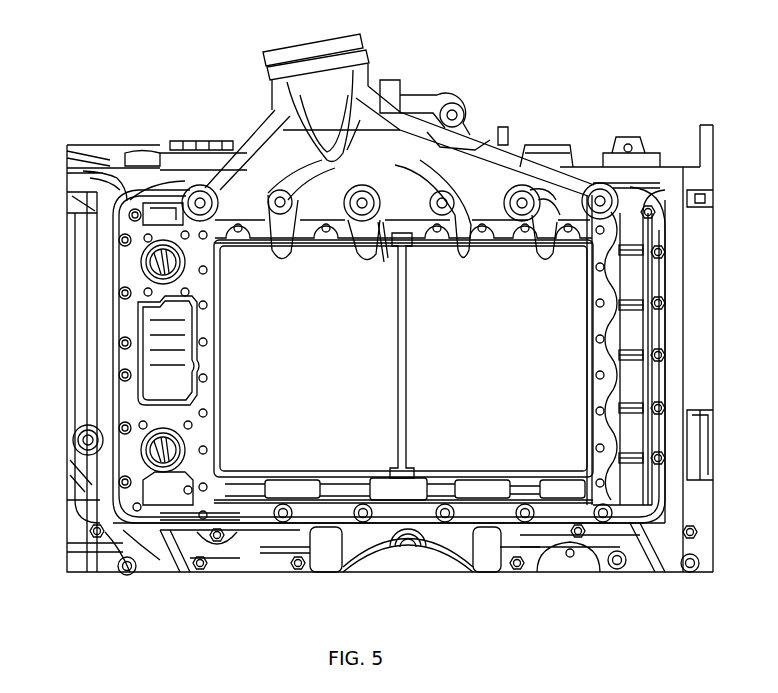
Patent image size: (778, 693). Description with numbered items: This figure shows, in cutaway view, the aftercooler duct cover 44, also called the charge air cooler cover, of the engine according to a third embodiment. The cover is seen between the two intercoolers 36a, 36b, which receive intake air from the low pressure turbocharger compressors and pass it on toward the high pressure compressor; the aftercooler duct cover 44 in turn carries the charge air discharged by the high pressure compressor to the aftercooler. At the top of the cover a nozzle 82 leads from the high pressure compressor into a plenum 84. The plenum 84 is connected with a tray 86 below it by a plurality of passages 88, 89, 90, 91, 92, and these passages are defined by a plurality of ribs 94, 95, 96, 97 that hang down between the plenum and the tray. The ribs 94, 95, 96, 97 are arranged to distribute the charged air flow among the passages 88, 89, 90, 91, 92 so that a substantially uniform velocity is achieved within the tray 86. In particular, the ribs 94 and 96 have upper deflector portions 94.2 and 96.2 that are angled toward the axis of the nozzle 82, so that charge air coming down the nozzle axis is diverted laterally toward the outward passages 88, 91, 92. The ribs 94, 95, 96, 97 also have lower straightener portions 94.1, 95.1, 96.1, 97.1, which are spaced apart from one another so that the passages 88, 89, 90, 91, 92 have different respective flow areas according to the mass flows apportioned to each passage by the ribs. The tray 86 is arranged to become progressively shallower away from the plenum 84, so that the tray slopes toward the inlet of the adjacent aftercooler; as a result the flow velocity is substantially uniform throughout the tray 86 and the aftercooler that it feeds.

The nozzle 82 is at (378, 72).
The plenum 84 is at (387, 163).
The tray 86 is at (320, 374).
The passage 88 is at (258, 217).
The passage 89 is at (338, 217).
The passage 90 is at (405, 240).
The passage 91 is at (503, 217).
The passage 92 is at (578, 217).
The rib 94 is at (280, 258).
The lower straightener portion 94.1 is at (262, 190).
The upper deflector portion 94.2 is at (298, 167).
The rib 95 is at (357, 245).
The lower straightener portion 95.1 is at (383, 262).
The rib 96 is at (462, 258).
The lower straightener portion 96.1 is at (457, 220).
The upper deflector portion 96.2 is at (454, 104).
The rib 97 is at (547, 262).
The lower straightener portion 97.1 is at (540, 208).
The aftercooler duct cover 44 is at (553, 124).
The intercooler 36a is at (700, 307).
The intercooler 36b is at (73, 288).